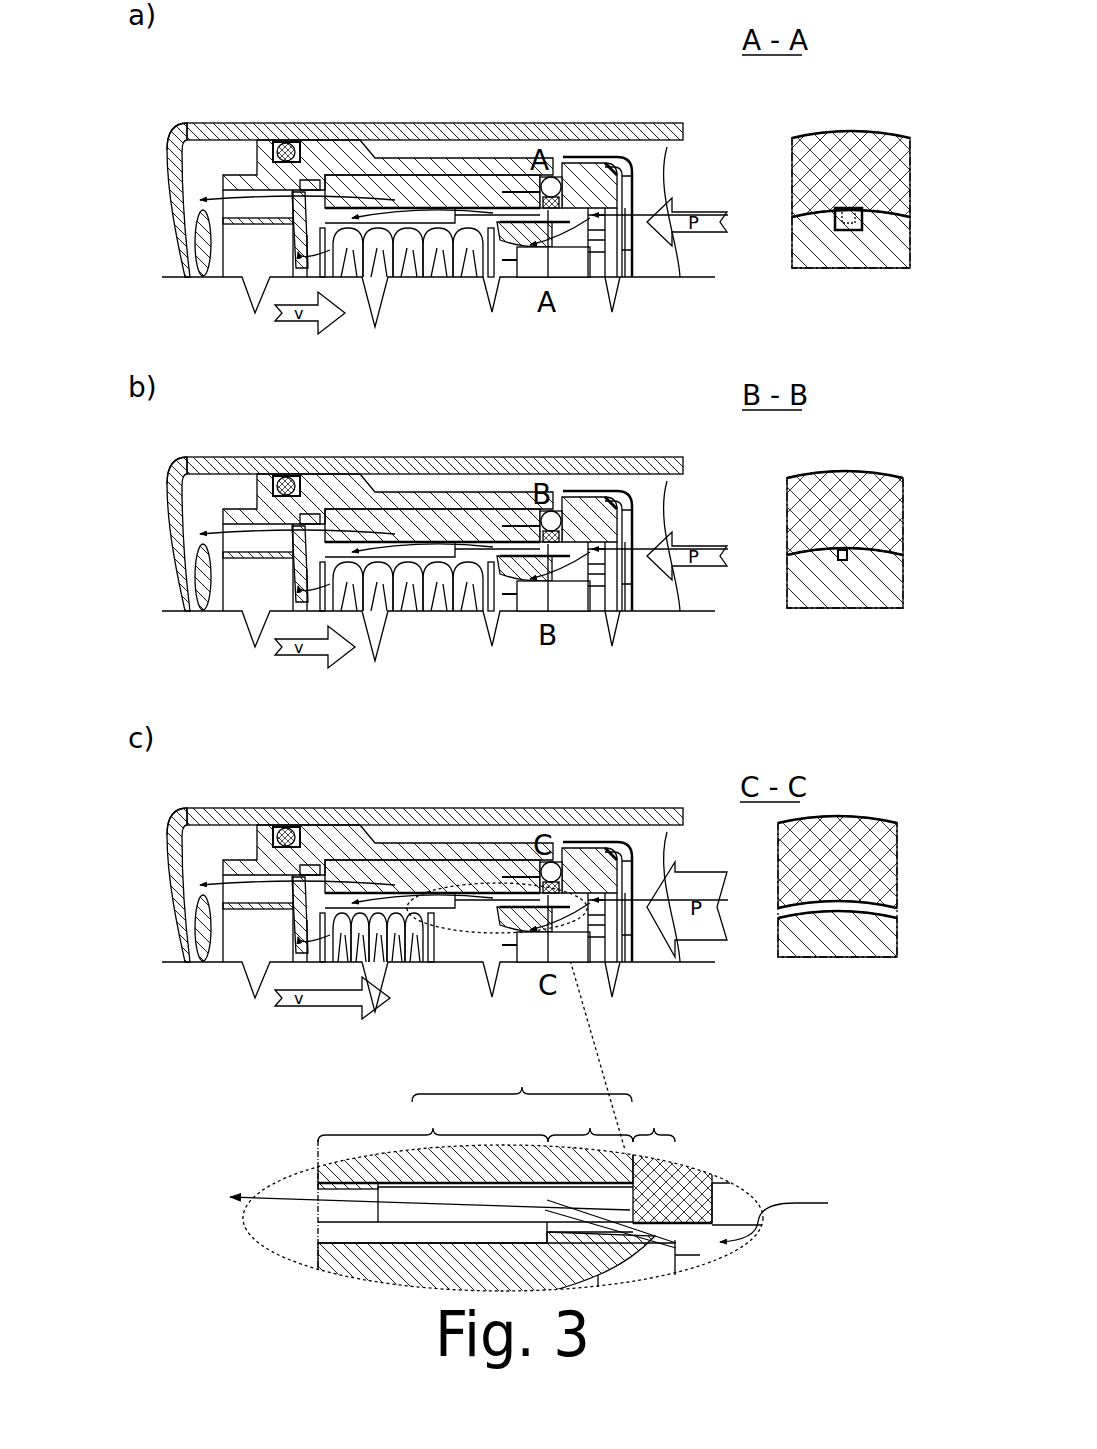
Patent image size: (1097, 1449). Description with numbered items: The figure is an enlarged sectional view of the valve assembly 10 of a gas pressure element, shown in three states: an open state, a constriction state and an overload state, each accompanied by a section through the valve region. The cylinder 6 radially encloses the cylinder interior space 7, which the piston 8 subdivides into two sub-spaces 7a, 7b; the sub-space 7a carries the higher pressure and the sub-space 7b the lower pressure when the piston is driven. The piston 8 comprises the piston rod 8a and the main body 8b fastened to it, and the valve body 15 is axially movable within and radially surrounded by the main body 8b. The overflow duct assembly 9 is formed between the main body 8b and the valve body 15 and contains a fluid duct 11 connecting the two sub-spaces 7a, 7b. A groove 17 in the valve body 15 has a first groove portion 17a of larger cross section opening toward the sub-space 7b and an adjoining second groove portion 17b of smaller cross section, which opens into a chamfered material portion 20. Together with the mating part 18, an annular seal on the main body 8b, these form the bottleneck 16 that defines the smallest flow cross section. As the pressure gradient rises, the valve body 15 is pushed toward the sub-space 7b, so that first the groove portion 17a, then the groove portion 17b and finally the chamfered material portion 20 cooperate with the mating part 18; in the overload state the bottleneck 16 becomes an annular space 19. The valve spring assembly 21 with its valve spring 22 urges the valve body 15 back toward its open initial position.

The cylinder 6 is at (230, 136).
The cylinder interior space 7 is at (185, 184).
The sub-space 7a is at (642, 155).
The sub-space 7b is at (180, 128).
The piston 8 is at (207, 302).
The piston rod 8a is at (217, 240).
The main body 8b is at (330, 150).
The overflow duct assembly 9 is at (535, 237).
The valve assembly 10 is at (637, 290).
The fluid duct 11 is at (600, 1220).
The valve body 15 is at (572, 267).
The bottleneck 16 is at (855, 208).
The groove 17 is at (510, 216).
The first groove portion 17a is at (578, 735).
The second groove portion 17b is at (685, 900).
The mating part 18 is at (568, 212).
The annular space 19 is at (690, 1250).
The chamfered material portion 20 is at (654, 1119).
The valve spring assembly 21 is at (415, 268).
The valve spring 22 is at (461, 812).